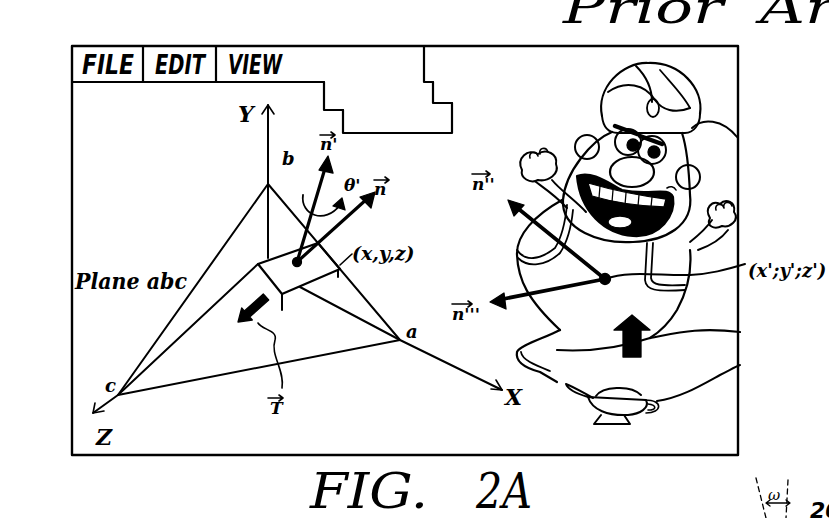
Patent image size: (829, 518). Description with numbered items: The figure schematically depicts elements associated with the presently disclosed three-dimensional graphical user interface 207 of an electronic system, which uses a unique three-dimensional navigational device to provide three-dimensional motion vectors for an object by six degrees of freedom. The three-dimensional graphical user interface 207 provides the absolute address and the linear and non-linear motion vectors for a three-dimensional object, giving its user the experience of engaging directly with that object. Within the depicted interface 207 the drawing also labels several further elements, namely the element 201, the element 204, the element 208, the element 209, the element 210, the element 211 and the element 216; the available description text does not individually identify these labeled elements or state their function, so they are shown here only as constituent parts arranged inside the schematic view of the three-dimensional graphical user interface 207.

The planar object in three-dimensional space 201 is at (257, 260).
The animated character graphic object 204 is at (739, 128).
The 3D graphical user interface 207 is at (739, 193).
The WINDOWS menu 208 is at (371, 53).
The character body 209 is at (739, 330).
The WINDOW1 sub-menu item 210 is at (425, 77).
The WINDOW2 sub-menu item 211 is at (450, 103).
The lamp 216 is at (739, 365).